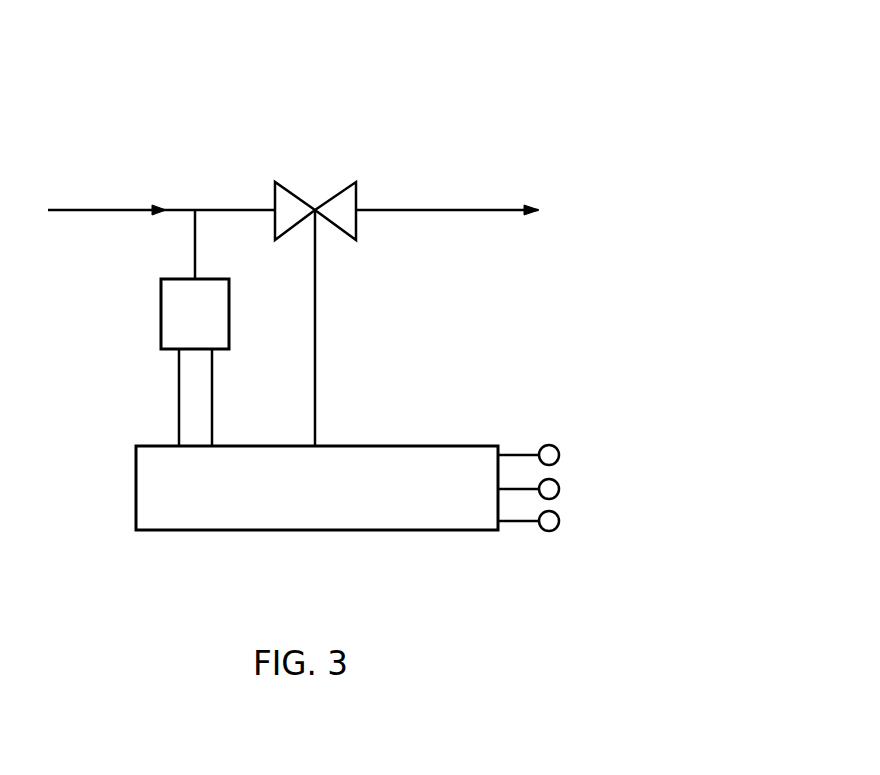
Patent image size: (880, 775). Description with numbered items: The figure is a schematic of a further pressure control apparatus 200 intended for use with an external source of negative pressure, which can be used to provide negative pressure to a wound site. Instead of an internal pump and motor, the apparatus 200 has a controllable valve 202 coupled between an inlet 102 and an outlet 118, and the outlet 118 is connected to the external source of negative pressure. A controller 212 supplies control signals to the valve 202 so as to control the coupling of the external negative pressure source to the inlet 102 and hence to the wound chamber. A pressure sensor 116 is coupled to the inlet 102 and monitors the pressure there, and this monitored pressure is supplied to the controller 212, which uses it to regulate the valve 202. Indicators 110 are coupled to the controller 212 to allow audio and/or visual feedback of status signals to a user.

The pressure control apparatus 200 is at (512, 66).
The inlet 102 is at (80, 212).
The controllable valve 202 is at (314, 208).
The outlet 118 is at (486, 209).
The pressure sensor 116 is at (160, 322).
The controller 212 is at (135, 493).
The indicators 110 is at (560, 451).